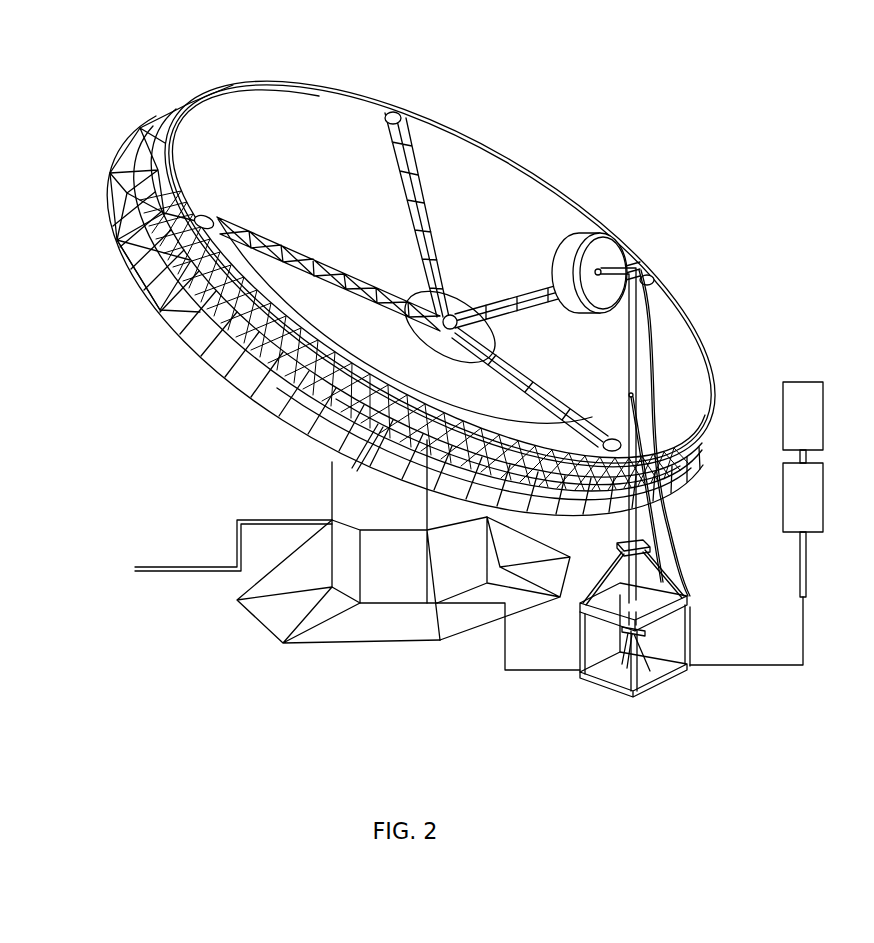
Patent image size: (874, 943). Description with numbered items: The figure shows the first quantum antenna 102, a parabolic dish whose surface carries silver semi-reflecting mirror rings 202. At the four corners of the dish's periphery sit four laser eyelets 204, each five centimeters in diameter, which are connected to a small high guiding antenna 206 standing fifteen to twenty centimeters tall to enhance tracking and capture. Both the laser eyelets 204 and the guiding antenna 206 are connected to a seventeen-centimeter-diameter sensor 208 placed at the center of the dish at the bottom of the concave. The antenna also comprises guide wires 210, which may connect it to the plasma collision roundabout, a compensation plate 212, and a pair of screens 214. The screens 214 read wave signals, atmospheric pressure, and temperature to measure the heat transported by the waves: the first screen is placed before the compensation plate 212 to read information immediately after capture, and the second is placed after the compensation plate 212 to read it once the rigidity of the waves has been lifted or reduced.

The first quantum antenna 102 is at (91, 53).
The semi-reflecting mirror rings 202 is at (470, 287).
The laser eyelets 204 is at (398, 110).
The guiding antenna 206 is at (618, 302).
The sensor 208 is at (412, 316).
The guide wires 210 is at (233, 545).
The compensation plate 212 is at (392, 390).
The pair of screens 214 is at (787, 429).